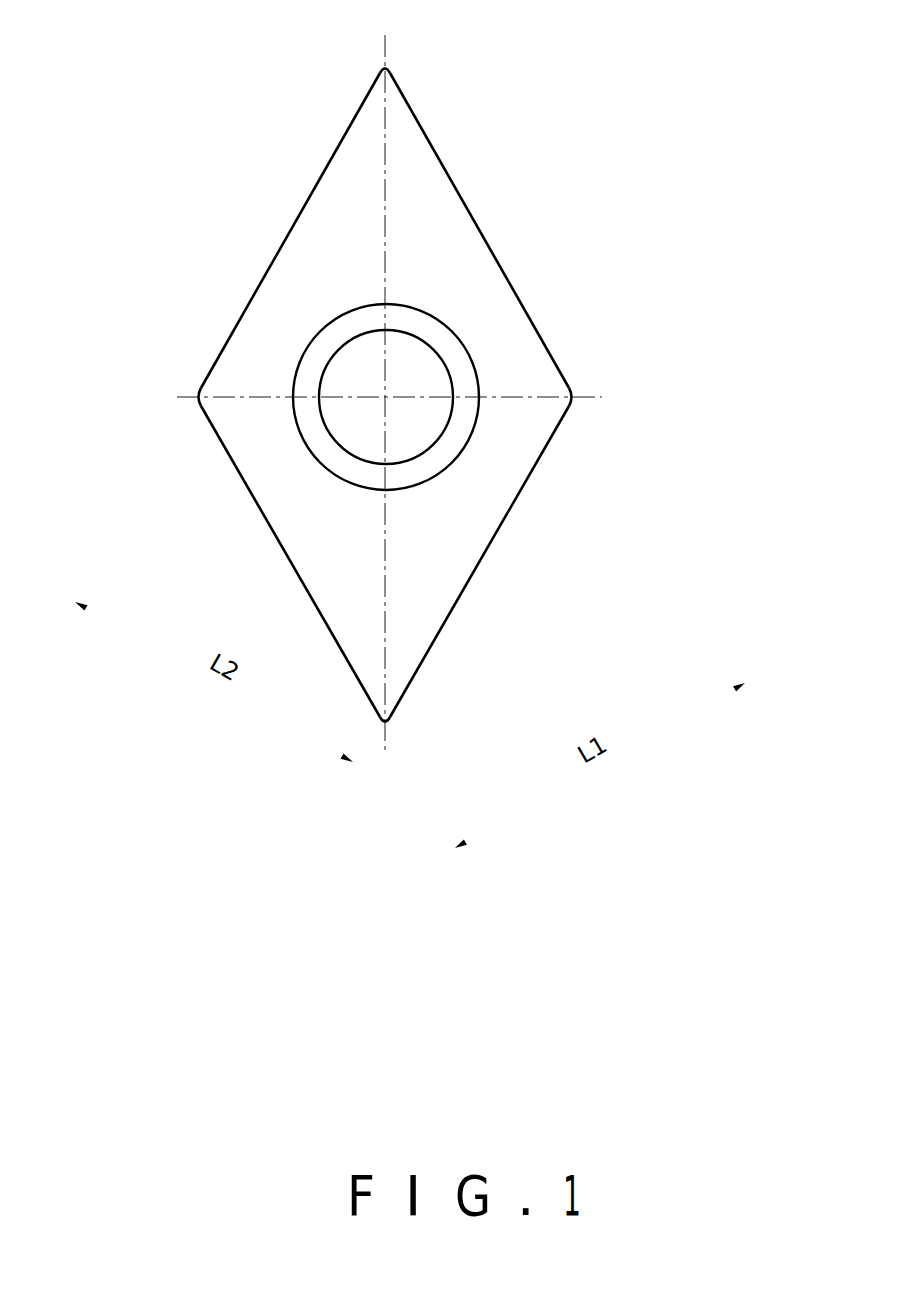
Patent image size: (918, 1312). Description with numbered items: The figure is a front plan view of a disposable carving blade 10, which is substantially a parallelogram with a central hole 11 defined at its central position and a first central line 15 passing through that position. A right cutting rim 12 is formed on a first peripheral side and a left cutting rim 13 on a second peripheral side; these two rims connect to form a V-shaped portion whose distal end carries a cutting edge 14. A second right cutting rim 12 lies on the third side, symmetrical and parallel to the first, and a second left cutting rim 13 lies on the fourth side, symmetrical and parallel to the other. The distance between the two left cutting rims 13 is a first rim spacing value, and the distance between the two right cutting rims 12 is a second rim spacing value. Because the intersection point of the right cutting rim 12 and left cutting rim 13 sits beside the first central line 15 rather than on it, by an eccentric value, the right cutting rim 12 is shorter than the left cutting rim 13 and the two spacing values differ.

The disposable carving blade 10 is at (401, 419).
The central hole 11 is at (433, 375).
The right cutting rim 12 is at (287, 230).
The left cutting rim 13 is at (472, 207).
The cutting edge 14 is at (385, 725).
The first central line 15 is at (390, 160).